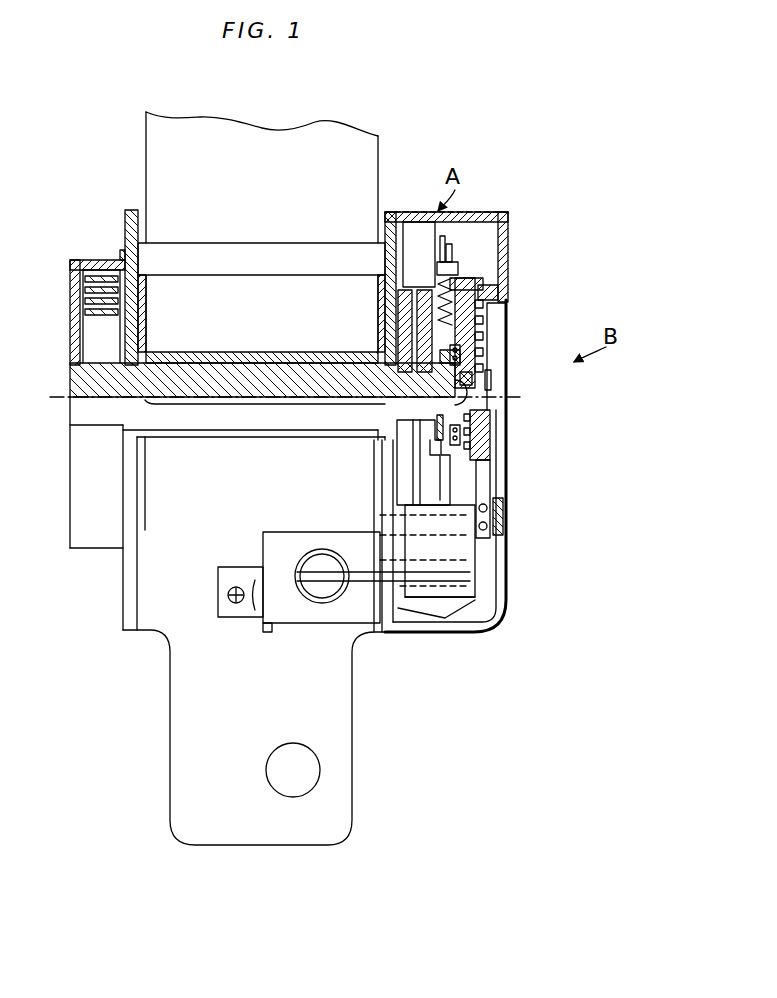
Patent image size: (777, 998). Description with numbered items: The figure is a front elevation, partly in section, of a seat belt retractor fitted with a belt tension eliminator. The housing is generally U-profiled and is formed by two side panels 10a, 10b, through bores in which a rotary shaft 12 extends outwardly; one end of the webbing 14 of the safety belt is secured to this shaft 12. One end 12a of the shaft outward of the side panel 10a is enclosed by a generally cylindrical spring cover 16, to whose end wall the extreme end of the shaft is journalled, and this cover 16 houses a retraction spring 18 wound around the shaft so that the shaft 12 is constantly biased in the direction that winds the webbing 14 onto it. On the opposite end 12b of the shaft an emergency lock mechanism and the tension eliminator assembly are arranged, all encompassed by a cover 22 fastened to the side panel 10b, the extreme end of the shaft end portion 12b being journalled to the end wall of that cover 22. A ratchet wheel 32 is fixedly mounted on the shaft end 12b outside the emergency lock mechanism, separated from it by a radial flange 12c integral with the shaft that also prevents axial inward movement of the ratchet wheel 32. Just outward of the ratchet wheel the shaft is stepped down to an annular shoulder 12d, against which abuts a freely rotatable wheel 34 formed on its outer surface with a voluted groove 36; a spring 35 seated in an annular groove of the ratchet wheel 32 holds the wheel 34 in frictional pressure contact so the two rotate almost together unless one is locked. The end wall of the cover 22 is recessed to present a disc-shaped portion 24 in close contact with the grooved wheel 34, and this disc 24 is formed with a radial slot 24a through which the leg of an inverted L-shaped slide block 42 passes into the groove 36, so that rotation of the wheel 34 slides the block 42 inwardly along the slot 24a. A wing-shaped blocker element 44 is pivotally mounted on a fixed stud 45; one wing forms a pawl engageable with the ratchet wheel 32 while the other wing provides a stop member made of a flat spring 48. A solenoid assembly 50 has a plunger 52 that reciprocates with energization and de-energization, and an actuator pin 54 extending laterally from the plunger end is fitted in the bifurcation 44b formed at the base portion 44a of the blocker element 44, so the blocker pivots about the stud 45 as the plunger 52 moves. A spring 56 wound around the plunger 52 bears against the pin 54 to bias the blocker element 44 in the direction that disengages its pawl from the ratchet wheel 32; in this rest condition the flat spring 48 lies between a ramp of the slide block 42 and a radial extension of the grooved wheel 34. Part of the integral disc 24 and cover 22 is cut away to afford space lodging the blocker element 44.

The side panel 10a is at (128, 215).
The side panel 10b is at (391, 228).
The rotary shaft 12 is at (275, 375).
The shaft end 12a is at (82, 385).
The shaft end portion 12b is at (378, 437).
The radial flange 12c is at (381, 342).
The annular shoulder 12d is at (470, 406).
The webbing 14 is at (378, 143).
The spring cover 16 is at (75, 318).
The retraction spring 18 is at (75, 283).
The cover 22 is at (487, 212).
The disc-shaped portion 24 is at (487, 442).
The radial slot 24a is at (492, 385).
The ratchet wheel 32 is at (486, 348).
The wheel 34 is at (478, 280).
The spring 35 is at (462, 360).
The voluted groove 36 is at (462, 436).
The slide block 42 is at (474, 380).
The blocker element 44 is at (458, 566).
The base portion 44a is at (472, 546).
The bifurcation 44b is at (477, 594).
The fixed stud 45 is at (502, 512).
The flat spring 48 is at (489, 481).
The solenoid assembly 50 is at (365, 607).
The plunger 52 is at (318, 563).
The actuator pin 54 is at (356, 574).
The spring 56 is at (320, 600).